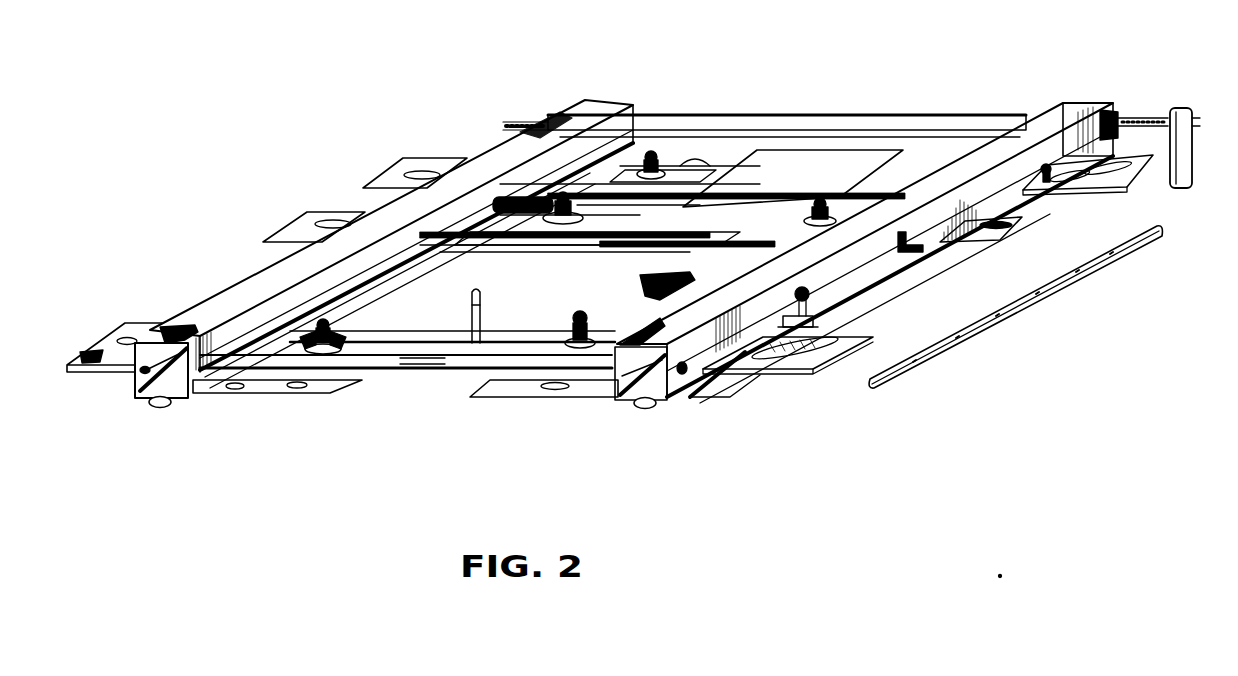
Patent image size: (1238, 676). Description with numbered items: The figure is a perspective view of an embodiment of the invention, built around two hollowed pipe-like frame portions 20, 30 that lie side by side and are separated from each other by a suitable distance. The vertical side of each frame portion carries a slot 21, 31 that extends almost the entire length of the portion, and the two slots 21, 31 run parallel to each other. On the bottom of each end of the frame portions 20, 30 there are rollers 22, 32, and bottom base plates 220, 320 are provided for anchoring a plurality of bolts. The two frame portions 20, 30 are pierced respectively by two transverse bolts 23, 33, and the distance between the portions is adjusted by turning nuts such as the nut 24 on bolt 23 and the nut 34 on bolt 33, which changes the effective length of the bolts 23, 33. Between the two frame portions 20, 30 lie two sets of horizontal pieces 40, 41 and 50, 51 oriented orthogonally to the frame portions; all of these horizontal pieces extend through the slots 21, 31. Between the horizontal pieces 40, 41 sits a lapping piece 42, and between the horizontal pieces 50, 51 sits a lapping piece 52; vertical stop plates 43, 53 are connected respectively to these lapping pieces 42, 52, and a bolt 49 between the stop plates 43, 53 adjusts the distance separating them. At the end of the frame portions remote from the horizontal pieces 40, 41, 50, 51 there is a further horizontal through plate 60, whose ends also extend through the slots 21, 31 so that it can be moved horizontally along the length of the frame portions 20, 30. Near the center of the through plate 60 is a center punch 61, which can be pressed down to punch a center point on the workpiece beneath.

The frame portion 20 is at (236, 297).
The slot 21 is at (365, 292).
The roller 22 is at (162, 403).
The bottom base plate 220 is at (297, 392).
The transverse bolt 23 is at (680, 240).
The nut 24 is at (903, 270).
The frame portion 30 is at (1052, 122).
The slot 31 is at (877, 300).
The roller 32 is at (645, 405).
The bottom base plate 320 is at (567, 380).
The transverse bolt 33 is at (840, 130).
The nut 34 is at (1103, 107).
The horizontal piece 40 is at (412, 163).
The horizontal piece 41 is at (1087, 193).
The lapping piece 42 is at (777, 170).
The vertical stop plate 43 is at (590, 195).
The bolt 49 is at (533, 197).
The horizontal piece 50 is at (315, 212).
The horizontal piece 51 is at (997, 243).
The lapping piece 52 is at (612, 247).
The vertical stop plate 53 is at (553, 188).
The horizontal through plate 60 is at (448, 380).
The center punch 61 is at (500, 380).